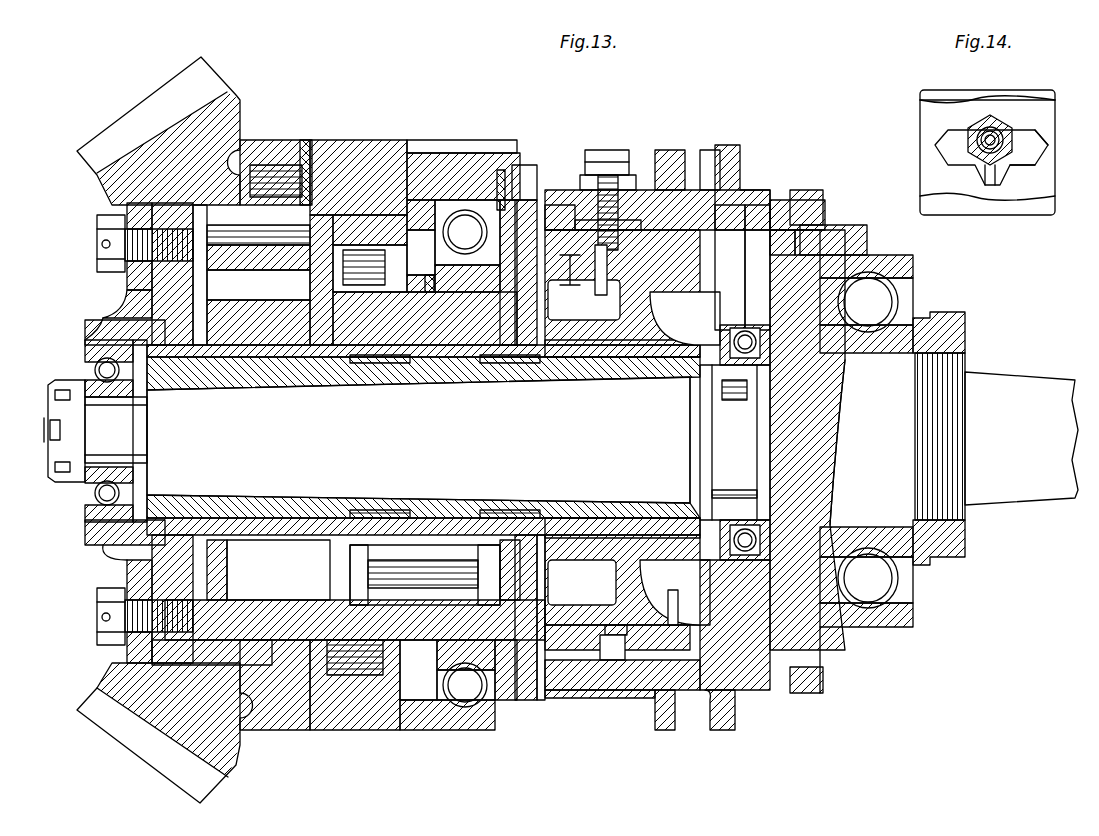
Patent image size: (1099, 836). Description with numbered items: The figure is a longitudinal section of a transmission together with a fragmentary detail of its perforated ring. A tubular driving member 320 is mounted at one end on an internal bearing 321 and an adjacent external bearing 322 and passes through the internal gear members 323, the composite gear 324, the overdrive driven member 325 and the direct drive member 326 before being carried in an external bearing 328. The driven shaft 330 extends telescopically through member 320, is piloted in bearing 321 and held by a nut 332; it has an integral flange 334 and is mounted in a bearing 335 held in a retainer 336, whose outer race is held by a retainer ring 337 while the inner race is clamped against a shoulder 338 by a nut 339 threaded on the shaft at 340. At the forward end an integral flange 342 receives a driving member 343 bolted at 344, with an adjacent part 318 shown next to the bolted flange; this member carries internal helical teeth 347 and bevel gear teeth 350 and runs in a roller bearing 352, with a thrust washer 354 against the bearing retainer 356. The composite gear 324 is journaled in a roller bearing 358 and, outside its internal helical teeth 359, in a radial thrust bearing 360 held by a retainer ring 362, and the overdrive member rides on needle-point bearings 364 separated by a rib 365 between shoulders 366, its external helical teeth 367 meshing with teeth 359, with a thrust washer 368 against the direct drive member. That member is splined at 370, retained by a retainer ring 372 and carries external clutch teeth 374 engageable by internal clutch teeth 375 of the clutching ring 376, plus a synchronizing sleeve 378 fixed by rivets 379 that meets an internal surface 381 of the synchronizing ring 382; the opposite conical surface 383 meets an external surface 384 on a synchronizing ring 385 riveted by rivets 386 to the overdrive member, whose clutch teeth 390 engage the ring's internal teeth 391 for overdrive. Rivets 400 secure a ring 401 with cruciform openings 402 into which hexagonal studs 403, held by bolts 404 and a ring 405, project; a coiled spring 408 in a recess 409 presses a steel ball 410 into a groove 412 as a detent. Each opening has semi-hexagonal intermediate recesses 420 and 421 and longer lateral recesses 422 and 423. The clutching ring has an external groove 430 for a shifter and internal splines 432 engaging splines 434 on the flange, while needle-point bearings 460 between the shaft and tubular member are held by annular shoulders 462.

In FIG. 13, the spacer 318 is at (205, 292).
In FIG. 13, the tubular driving member 320 is at (292, 370).
In FIG. 13, the internal bearing 321 is at (98, 368).
In FIG. 13, the external bearing 322 is at (220, 318).
In FIG. 13, the internal gear members 323 is at (258, 236).
In FIG. 13, the composite gear 324 is at (340, 275).
In FIG. 13, the overdrive driven member 325 is at (520, 348).
In FIG. 13, the direct drive member 326 is at (645, 350).
In FIG. 13, the external bearing 328 is at (745, 330).
In FIG. 13, the driven shaft 330 is at (650, 440).
In FIG. 13, the nut 332 is at (50, 410).
In FIG. 13, the integral flange 334 is at (780, 300).
In FIG. 13, the bearing 335 is at (882, 300).
In FIG. 13, the retainer 336 is at (868, 240).
In FIG. 13, the retainer ring 337 is at (825, 232).
In FIG. 13, the shoulder 338 is at (835, 350).
In FIG. 13, the nut 339 is at (955, 355).
In FIG. 13, the threaded portion 340 is at (950, 425).
In FIG. 13, the integral flange 342 is at (125, 292).
In FIG. 13, the driving member 343 is at (118, 196).
In FIG. 13, the bolts 344 is at (97, 242).
In FIG. 13, the internal helical teeth 347 is at (258, 257).
In FIG. 13, the bevel gear teeth 350 is at (150, 117).
In FIG. 13, the roller bearing 352 is at (262, 175).
In FIG. 13, the thrust washer 354 is at (306, 170).
In FIG. 13, the bearing retainer 356 is at (357, 150).
In FIG. 13, the roller bearing 358 is at (355, 690).
In FIG. 13, the internal helical teeth 359 is at (376, 590).
In FIG. 13, the radial thrust bearing 360 is at (465, 225).
In FIG. 13, the retainer ring 362 is at (500, 195).
In FIG. 13, the needle-point bearings 364 is at (423, 252).
In FIG. 13, the retainer ring / annular rib 365 is at (490, 278).
In FIG. 13, the shoulders 366 is at (345, 362).
In FIG. 13, the external helical teeth 367 is at (375, 552).
In FIG. 13, the thrust washer 368 is at (520, 560).
In FIG. 13, the splines 370 is at (600, 350).
In FIG. 13, the retainer ring 372 is at (715, 372).
In FIG. 13, the external clutch teeth 374 is at (706, 220).
In FIG. 13, the internal clutch teeth 375 is at (675, 215).
In FIG. 13, the clutching ring 376 is at (745, 205).
In FIG. 13, the synchronizing sleeve 378 is at (640, 622).
In FIG. 13, the rivets 379 is at (672, 610).
In FIG. 13, the internal friction clutch surface 381 is at (735, 262).
In FIG. 13, the synchronizing ring 382 is at (618, 250).
In FIG. 14, the synchronizing ring 382 is at (964, 92).
In FIG. 13, the conical synchronizing surface 383 is at (580, 640).
In FIG. 13, the external friction clutch surface 384 is at (556, 635).
In FIG. 13, the synchronizing ring 385 is at (520, 608).
In FIG. 13, the rivets 386 is at (570, 262).
In FIG. 13, the clutch teeth 390 is at (528, 200).
In FIG. 13, the internal clutch teeth 391 is at (545, 215).
In FIG. 13, the rivets 400 is at (615, 665).
In FIG. 13, the ring 401 is at (565, 665).
In FIG. 14, the ring 401 is at (923, 108).
In FIG. 13, the openings 402 is at (675, 195).
In FIG. 14, the openings 402 is at (1028, 170).
In FIG. 13, the studs 403 is at (603, 200).
In FIG. 14, the studs 403 is at (1000, 135).
In FIG. 13, the bolts 404 is at (608, 185).
In FIG. 13, the ring 405 is at (672, 150).
In FIG. 13, the coiled spring 408 is at (617, 205).
In FIG. 14, the coiled spring 408 is at (983, 148).
In FIG. 13, the recess 409 is at (648, 215).
In FIG. 14, the recess 409 is at (977, 140).
In FIG. 13, the steel ball 410 is at (568, 215).
In FIG. 13, the groove 412 is at (685, 318).
In FIG. 14, the intermediate recess 420 is at (972, 128).
In FIG. 14, the intermediate recess 421 is at (980, 185).
In FIG. 14, the lateral recess 422 is at (935, 168).
In FIG. 14, the lateral recess 423 is at (1040, 150).
In FIG. 13, the external groove 430 is at (712, 165).
In FIG. 13, the internal splines 432 is at (780, 210).
In FIG. 13, the splines 434 is at (818, 210).
In FIG. 13, the needle-point bearings 460 is at (732, 490).
In FIG. 13, the annular shoulders 462 is at (762, 440).